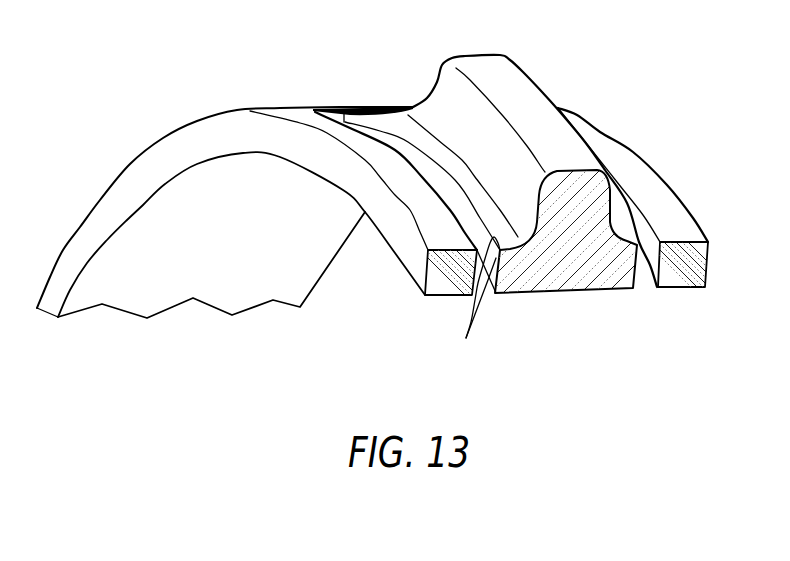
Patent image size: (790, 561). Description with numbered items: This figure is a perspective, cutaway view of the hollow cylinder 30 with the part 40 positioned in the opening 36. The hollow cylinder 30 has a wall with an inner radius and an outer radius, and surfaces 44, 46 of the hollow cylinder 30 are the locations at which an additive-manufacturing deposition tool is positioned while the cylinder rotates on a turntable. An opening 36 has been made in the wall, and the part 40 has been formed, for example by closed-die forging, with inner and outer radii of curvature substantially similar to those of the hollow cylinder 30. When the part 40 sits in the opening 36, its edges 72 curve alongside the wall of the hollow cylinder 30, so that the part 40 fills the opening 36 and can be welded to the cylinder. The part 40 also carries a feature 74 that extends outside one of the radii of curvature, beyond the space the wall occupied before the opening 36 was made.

The hollow cylinder 30 is at (130, 163).
The surface 44 is at (240, 247).
The surface 46 is at (415, 223).
The part 40 is at (531, 71).
The edges 72 is at (466, 338).
The feature 74 is at (580, 118).
The opening 36 is at (639, 203).